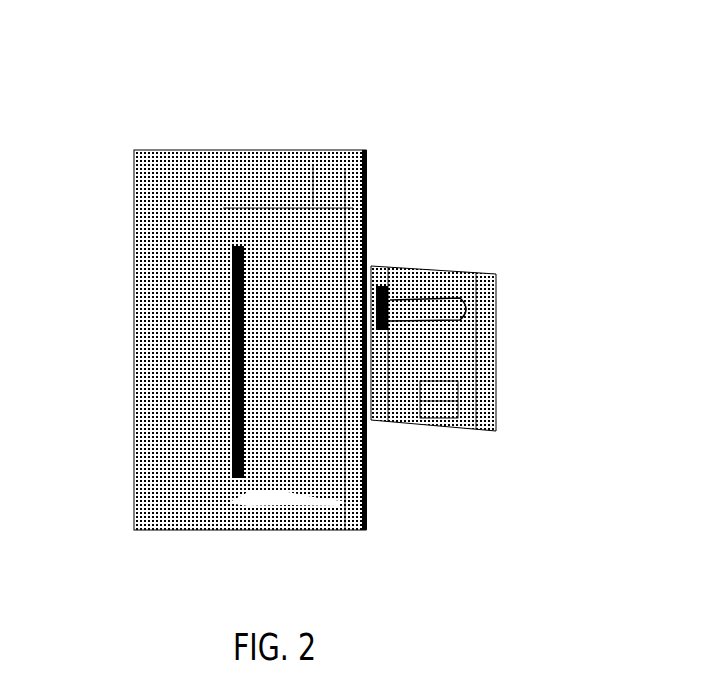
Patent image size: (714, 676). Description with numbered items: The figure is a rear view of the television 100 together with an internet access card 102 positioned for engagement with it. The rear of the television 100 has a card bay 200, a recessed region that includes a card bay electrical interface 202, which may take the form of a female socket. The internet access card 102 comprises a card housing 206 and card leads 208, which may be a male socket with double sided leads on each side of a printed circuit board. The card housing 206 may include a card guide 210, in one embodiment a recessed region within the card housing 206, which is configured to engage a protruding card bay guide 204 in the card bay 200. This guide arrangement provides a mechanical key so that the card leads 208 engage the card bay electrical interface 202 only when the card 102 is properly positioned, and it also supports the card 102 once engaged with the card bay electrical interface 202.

The television 100 is at (315, 143).
The internet access card 102 is at (440, 264).
The card bay 200 is at (305, 420).
The card bay electrical interface 202 is at (236, 282).
The card bay guide 204 is at (290, 293).
The card housing 206 is at (478, 355).
The card leads 208 is at (378, 300).
The card guide 210 is at (447, 305).